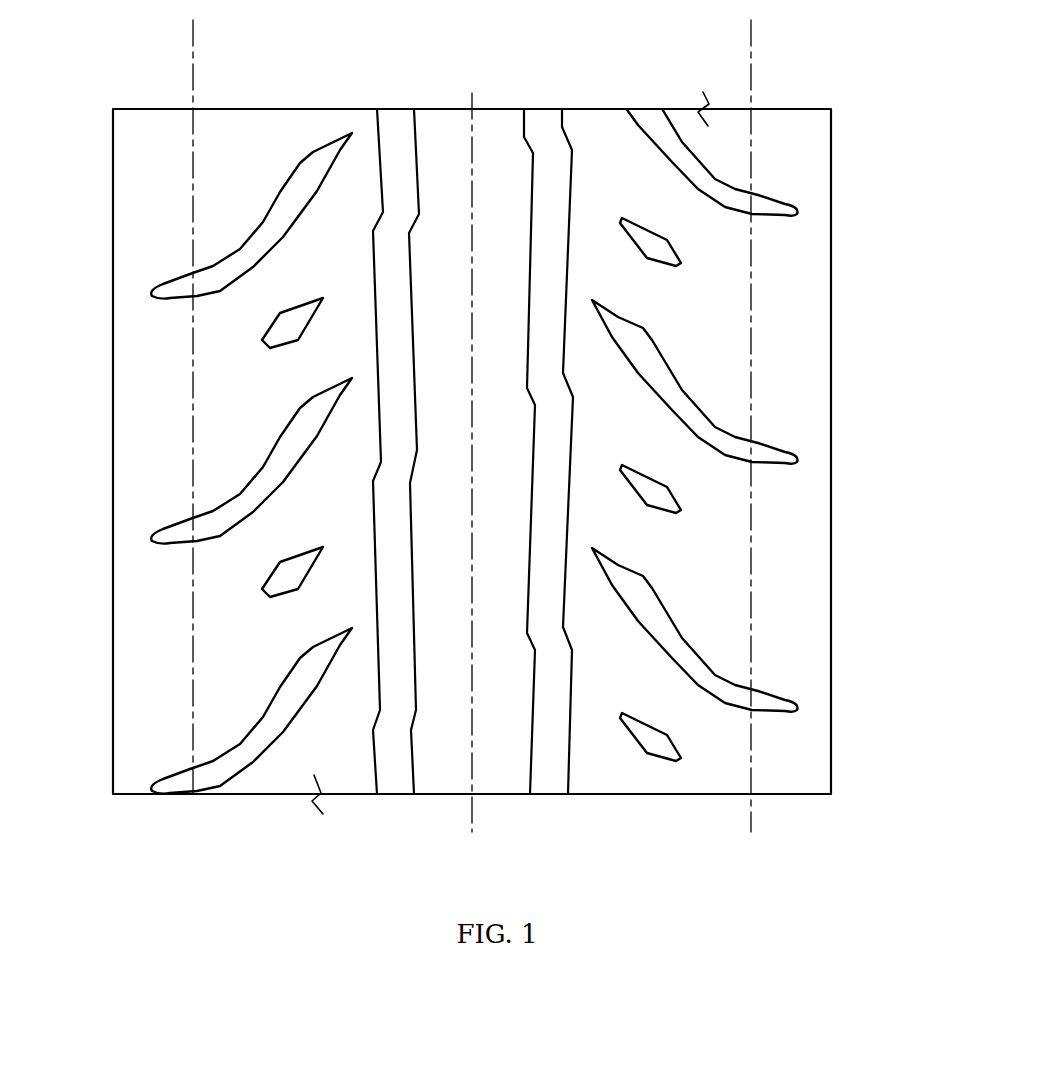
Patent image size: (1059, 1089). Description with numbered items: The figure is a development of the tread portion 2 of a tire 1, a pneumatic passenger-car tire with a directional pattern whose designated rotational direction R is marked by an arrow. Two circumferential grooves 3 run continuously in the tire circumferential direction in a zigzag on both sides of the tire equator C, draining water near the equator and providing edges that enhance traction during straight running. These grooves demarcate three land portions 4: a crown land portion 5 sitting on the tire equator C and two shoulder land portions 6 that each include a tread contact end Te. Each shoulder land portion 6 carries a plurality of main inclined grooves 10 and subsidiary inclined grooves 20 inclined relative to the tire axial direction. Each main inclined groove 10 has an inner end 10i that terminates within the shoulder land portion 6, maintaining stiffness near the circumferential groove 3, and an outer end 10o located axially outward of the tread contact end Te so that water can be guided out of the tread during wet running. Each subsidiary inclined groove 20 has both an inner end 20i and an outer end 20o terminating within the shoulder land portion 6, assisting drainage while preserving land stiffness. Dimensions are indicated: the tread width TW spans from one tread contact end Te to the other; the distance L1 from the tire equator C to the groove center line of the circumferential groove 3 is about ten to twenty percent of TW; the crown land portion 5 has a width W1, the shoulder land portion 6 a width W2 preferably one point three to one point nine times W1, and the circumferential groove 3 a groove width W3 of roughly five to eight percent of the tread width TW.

The tire 1 is at (592, 103).
The tread portion 2 is at (337, 106).
The circumferential groove 3 is at (396, 156).
The land portion 4 is at (240, 150).
The crown land portion 5 is at (496, 157).
The shoulder land portion 6 is at (281, 150).
The main inclined groove 10 is at (262, 237).
The tire-axially inner end of main inclined groove 10i is at (357, 376).
The tire-axially outer end of main inclined groove 10o is at (150, 543).
The subsidiary inclined groove 20 is at (290, 325).
The tire-axially inner end of subsidiary inclined groove 20i is at (328, 534).
The tire-axially outer end of subsidiary inclined groove 20o is at (270, 597).
The tread contact end Te is at (192, 147).
The tire equator C is at (472, 80).
The tread width TW is at (193, 25).
The width of crown land portion W1 is at (412, 453).
The width of shoulder land portion W2 is at (563, 794).
The groove width of circumferential groove W3 is at (495, 536).
The distance from tire equator to groove center line L1 is at (385, 587).
The rotational direction R is at (67, 705).